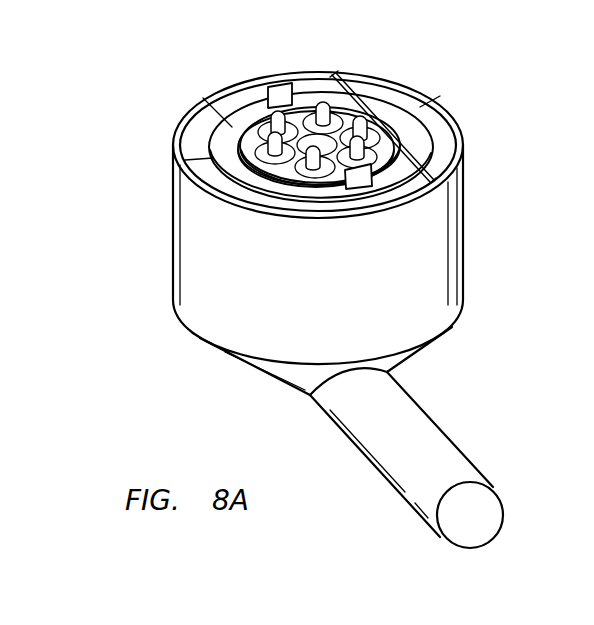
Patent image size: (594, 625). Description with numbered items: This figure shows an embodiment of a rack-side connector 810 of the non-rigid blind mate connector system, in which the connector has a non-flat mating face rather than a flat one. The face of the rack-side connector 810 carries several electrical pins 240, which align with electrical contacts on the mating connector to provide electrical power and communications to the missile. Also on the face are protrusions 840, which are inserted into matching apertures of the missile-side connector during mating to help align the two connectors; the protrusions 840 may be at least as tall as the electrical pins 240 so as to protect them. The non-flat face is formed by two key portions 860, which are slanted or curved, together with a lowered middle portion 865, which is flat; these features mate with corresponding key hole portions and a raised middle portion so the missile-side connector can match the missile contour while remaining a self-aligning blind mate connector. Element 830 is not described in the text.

The rack-side connector 810 is at (205, 258).
The annular plate 830 is at (196, 130).
The key portion 860 is at (225, 147).
The electrical pin 240 is at (323, 110).
The protrusion 840 is at (273, 90).
The lowered middle portion 865 is at (398, 165).